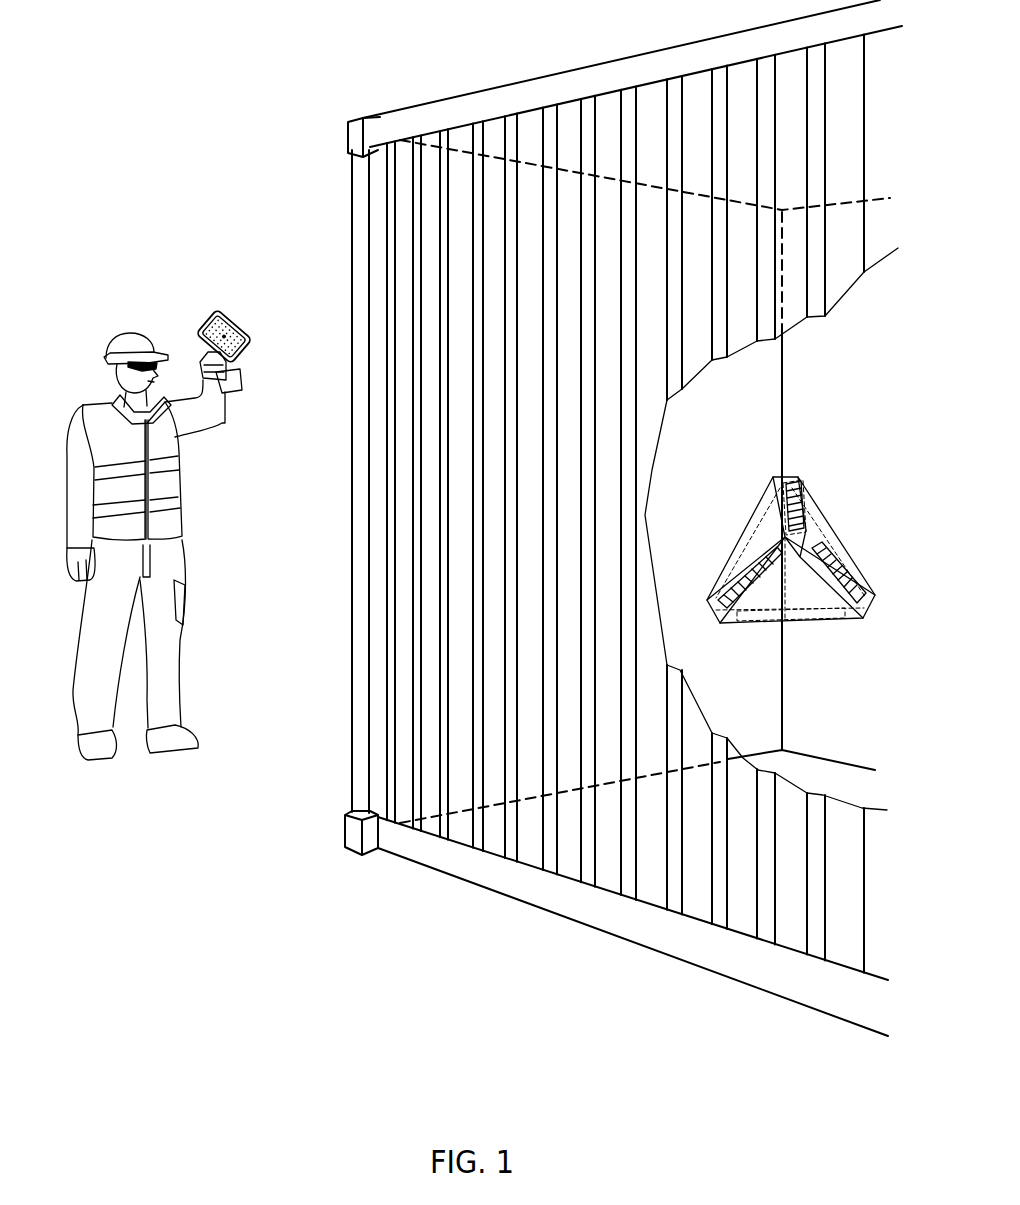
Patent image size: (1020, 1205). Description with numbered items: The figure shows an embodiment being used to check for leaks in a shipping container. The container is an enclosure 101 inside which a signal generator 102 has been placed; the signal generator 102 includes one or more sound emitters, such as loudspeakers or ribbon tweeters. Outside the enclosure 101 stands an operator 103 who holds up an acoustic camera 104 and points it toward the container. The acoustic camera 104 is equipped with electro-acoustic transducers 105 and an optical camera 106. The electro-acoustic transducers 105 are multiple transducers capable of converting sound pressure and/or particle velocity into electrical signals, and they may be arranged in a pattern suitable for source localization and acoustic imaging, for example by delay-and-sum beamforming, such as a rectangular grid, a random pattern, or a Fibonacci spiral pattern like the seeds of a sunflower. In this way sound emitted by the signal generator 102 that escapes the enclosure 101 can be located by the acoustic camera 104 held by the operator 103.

The enclosure 101 is at (394, 117).
The signal generator 102 is at (830, 620).
The operator 103 is at (92, 403).
The acoustic camera 104 is at (212, 304).
The electro-acoustic transducers 105 is at (245, 343).
The optical camera 106 is at (233, 312).